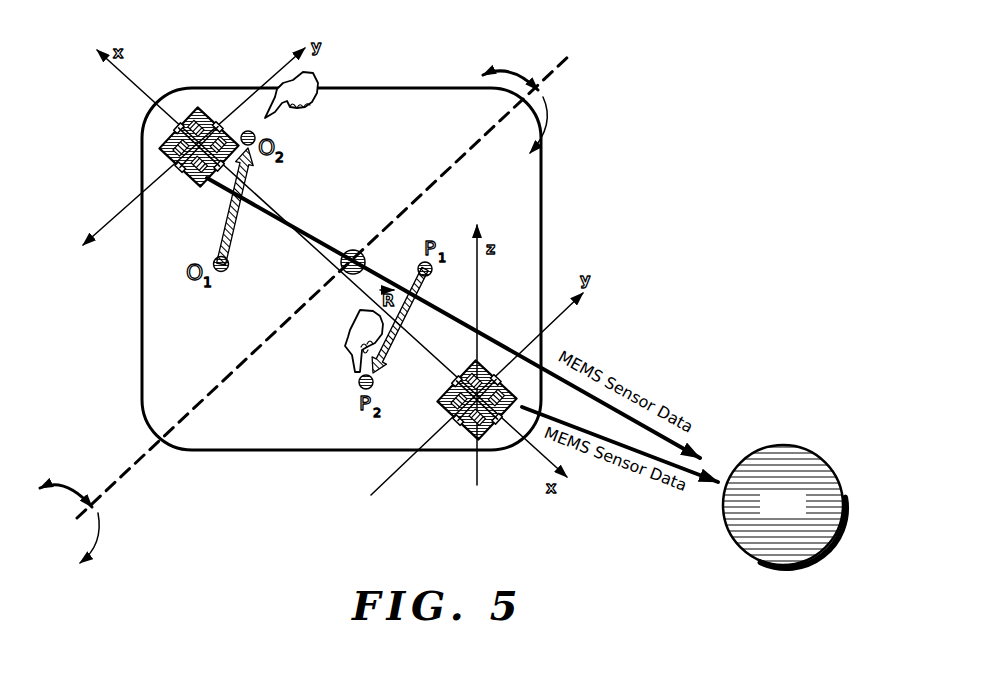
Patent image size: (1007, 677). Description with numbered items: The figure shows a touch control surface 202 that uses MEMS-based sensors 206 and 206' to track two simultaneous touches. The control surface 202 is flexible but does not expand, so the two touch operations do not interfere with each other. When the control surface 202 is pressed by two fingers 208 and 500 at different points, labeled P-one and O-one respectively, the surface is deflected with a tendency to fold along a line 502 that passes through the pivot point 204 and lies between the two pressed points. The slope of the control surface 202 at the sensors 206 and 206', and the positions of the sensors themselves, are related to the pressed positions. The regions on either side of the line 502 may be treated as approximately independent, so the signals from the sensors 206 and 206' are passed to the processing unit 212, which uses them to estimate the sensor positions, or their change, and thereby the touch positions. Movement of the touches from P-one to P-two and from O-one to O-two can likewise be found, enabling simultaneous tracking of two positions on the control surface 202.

The control surface 202 is at (457, 88).
The pivot point 204 is at (353, 250).
The sensor 206 is at (482, 434).
The sensor 206' is at (152, 147).
The finger 208 is at (350, 336).
The processing unit 212 is at (782, 444).
The finger 500 is at (318, 77).
The line 502 is at (130, 470).